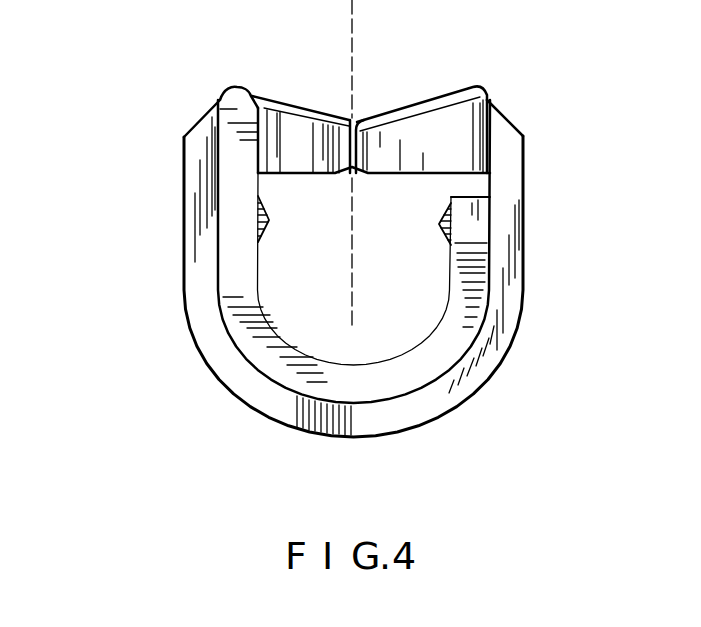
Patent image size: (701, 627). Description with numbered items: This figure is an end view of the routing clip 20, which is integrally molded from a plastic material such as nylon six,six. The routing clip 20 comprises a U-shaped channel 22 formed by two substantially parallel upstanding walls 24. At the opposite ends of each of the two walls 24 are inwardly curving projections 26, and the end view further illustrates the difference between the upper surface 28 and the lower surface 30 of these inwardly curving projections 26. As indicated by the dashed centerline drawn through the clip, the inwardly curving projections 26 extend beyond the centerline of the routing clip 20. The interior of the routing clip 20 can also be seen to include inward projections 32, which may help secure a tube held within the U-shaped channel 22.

The routing clip 20 is at (145, 105).
The U-shaped channel 22 is at (388, 372).
The upstanding walls 24 is at (470, 207).
The inwardly curving projections 26 is at (293, 143).
The upper surface 28 is at (410, 100).
The lower surface 30 is at (290, 177).
The inward projections 32 is at (270, 232).